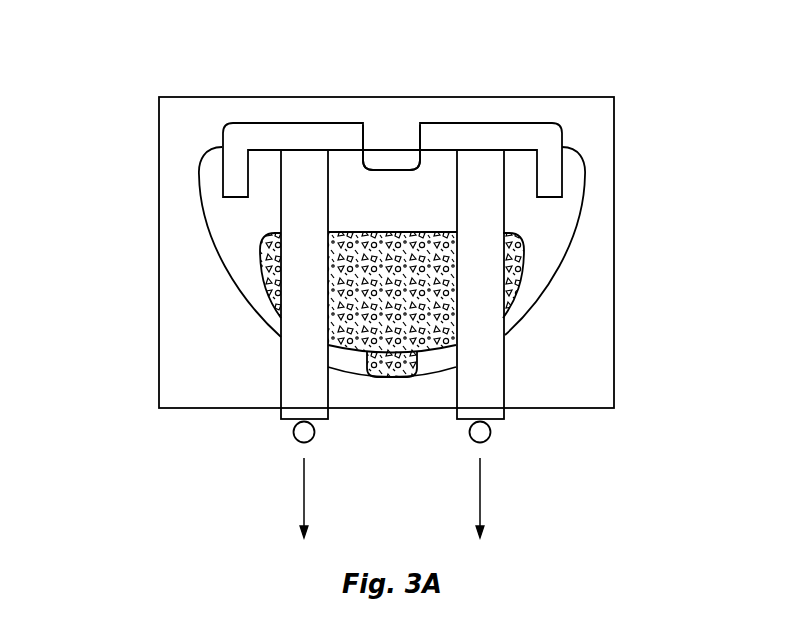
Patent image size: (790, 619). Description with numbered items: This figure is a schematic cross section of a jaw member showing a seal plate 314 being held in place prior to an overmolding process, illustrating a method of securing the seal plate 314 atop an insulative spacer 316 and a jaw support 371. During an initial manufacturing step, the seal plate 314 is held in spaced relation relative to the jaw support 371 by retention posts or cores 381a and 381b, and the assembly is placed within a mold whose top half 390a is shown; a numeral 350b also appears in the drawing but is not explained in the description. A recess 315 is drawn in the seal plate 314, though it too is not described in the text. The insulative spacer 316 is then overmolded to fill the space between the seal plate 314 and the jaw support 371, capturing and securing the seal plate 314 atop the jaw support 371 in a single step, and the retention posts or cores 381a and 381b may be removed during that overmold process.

The seal plate 314 is at (461, 137).
The notch / recess 315 is at (399, 115).
The insulative spacer 316 is at (560, 233).
The housing 350b is at (188, 340).
The jaw support 371 is at (376, 236).
The retention post or core 381a is at (293, 363).
The retention post or core 381b is at (493, 348).
The top mold half 390a is at (175, 172).